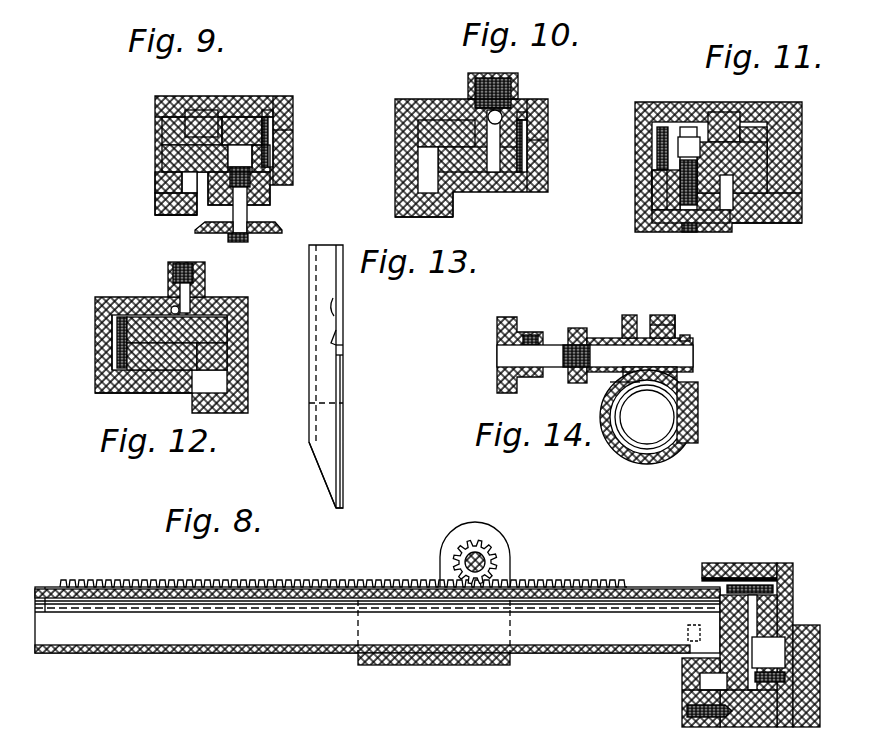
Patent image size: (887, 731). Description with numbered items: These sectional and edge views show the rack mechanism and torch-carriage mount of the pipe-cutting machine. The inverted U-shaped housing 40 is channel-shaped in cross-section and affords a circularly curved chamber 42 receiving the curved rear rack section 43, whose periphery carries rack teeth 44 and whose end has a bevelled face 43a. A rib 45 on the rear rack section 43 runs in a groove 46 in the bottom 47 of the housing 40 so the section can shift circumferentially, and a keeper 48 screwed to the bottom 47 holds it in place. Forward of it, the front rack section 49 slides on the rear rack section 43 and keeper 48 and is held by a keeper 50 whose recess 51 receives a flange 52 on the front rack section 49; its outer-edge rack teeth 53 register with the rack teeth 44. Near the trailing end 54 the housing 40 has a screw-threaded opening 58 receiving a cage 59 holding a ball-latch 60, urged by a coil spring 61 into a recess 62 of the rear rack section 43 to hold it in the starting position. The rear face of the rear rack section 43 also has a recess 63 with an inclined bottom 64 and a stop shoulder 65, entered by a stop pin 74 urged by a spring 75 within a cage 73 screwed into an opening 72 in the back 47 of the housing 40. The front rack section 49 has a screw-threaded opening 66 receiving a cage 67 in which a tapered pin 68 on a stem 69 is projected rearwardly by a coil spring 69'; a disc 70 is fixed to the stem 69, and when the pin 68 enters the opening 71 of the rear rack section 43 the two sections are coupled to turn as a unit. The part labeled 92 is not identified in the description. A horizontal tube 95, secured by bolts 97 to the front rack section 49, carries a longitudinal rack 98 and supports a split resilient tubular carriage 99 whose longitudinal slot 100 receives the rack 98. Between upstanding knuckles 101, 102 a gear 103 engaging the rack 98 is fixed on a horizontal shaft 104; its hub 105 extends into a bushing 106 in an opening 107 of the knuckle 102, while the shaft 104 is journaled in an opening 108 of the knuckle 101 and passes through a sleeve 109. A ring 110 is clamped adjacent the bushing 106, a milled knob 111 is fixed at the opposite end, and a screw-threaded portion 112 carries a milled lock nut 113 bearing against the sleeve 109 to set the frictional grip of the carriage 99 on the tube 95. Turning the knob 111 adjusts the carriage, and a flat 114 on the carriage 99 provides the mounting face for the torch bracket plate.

In FIG. 9, the housing 40 is at (278, 104).
In FIG. 10, the housing 40 is at (430, 92).
In FIG. 12, the housing 40 is at (100, 331).
In FIG. 8, the housing 40 is at (775, 570).
In FIG. 9, the chamber 42 is at (283, 135).
In FIG. 10, the chamber 42 is at (548, 142).
In FIG. 9, the rear rack section 43 is at (245, 120).
In FIG. 10, the rear rack section 43 is at (535, 115).
In FIG. 11, the rear rack section 43 is at (725, 118).
In FIG. 12, the rear rack section 43 is at (140, 335).
In FIG. 13, the rear rack section 43 is at (326, 292).
In FIG. 8, the rear rack section 43 is at (770, 612).
In FIG. 13, the bevelled face 43a is at (320, 470).
In FIG. 9, the rack teeth 44 is at (290, 112).
In FIG. 10, the rack teeth 44 is at (548, 122).
In FIG. 12, the rack teeth 44 is at (115, 322).
In FIG. 8, the rack teeth 44 is at (755, 588).
In FIG. 9, the rib 45 is at (205, 110).
In FIG. 9, the groove 46 is at (160, 112).
In FIG. 9, the bottom 47 is at (175, 100).
In FIG. 10, the bottom 47 is at (520, 105).
In FIG. 11, the bottom 47 is at (650, 112).
In FIG. 12, the bottom 47 is at (110, 300).
In FIG. 8, the bottom 47 is at (788, 590).
In FIG. 9, the keeper 48 is at (175, 128).
In FIG. 10, the keeper 48 is at (430, 130).
In FIG. 11, the keeper 48 is at (760, 130).
In FIG. 9, the front rack section 49 is at (190, 158).
In FIG. 10, the front rack section 49 is at (500, 172).
In FIG. 11, the front rack section 49 is at (790, 160).
In FIG. 12, the front rack section 49 is at (140, 360).
In FIG. 8, the front rack section 49 is at (700, 665).
In FIG. 9, the keeper 50 is at (170, 210).
In FIG. 10, the keeper 50 is at (400, 215).
In FIG. 11, the keeper 50 is at (760, 225).
In FIG. 8, the keeper 50 is at (688, 712).
In FIG. 9, the recess 51 is at (185, 185).
In FIG. 10, the recess 51 is at (420, 180).
In FIG. 8, the recess 51 is at (695, 698).
In FIG. 9, the flange 52 is at (168, 182).
In FIG. 10, the flange 52 is at (452, 205).
In FIG. 11, the flange 52 is at (770, 217).
In FIG. 8, the flange 52 is at (710, 680).
In FIG. 9, the rack teeth 53 is at (268, 147).
In FIG. 10, the rack teeth 53 is at (522, 148).
In FIG. 12, the rack teeth 53 is at (120, 358).
In FIG. 8, the rack teeth 53 is at (740, 588).
In FIG. 13, the trailing end 54 is at (345, 505).
In FIG. 10, the screw-threaded opening 58 is at (478, 105).
In FIG. 10, the cage 59 is at (485, 98).
In FIG. 10, the ball-latch 60 is at (515, 90).
In FIG. 10, the compressible coil spring 61 is at (494, 110).
In FIG. 10, the recess 62 is at (493, 150).
In FIG. 13, the recess 62 is at (332, 318).
In FIG. 12, the recess 63 is at (227, 332).
In FIG. 13, the inclined bottom 64 is at (343, 333).
In FIG. 13, the stop shoulder 65 is at (345, 355).
In FIG. 9, the screw-threaded opening 66 is at (178, 215).
In FIG. 11, the screw-threaded opening 66 is at (728, 200).
In FIG. 9, the cage 67 is at (255, 198).
In FIG. 9, the tapered reciprocatory pin 68 is at (252, 160).
In FIG. 11, the tapered reciprocatory pin 68 is at (662, 140).
In FIG. 13, the tapered reciprocatory pin 68 is at (345, 342).
In FIG. 9, the stem 69 is at (279, 214).
In FIG. 11, the stem 69 is at (701, 240).
In FIG. 9, the compressible coil spring 69' is at (282, 180).
In FIG. 11, the compressible coil spring 69' is at (645, 188).
In FIG. 9, the disc 70 is at (258, 233).
In FIG. 11, the disc 70 is at (665, 225).
In FIG. 11, the opening 71 is at (690, 130).
In FIG. 12, the screw-threaded opening 72 is at (180, 306).
In FIG. 12, the cage 73 is at (168, 290).
In FIG. 12, the stop pin 74 is at (195, 295).
In FIG. 12, the spring 75 is at (186, 264).
In FIG. 11, the lug 92 is at (658, 218).
In FIG. 14, the horizontal tube 95 is at (620, 440).
In FIG. 8, the horizontal tube 95 is at (158, 651).
In FIG. 8, the bolts 97 is at (688, 632).
In FIG. 14, the rack 98 is at (647, 417).
In FIG. 8, the rack 98 is at (617, 582).
In FIG. 14, the tubular carriage 99 is at (672, 442).
In FIG. 8, the tubular carriage 99 is at (468, 665).
In FIG. 14, the longitudinal slot 100 is at (612, 398).
In FIG. 14, the knuckle 101 is at (626, 318).
In FIG. 8, the knuckle 101 is at (462, 528).
In FIG. 14, the knuckle 102 is at (660, 320).
In FIG. 14, the gear 103 is at (678, 330).
In FIG. 8, the gear 103 is at (497, 560).
In FIG. 14, the horizontal shaft 104 is at (690, 358).
In FIG. 14, the hub 105 is at (670, 376).
In FIG. 14, the bushing 106 is at (680, 386).
In FIG. 14, the opening 107 is at (670, 325).
In FIG. 14, the opening 108 is at (620, 378).
In FIG. 14, the sleeve 109 is at (615, 338).
In FIG. 14, the ring 110 is at (690, 338).
In FIG. 14, the milled knob 111 is at (497, 368).
In FIG. 14, the screw-threaded portion 112 is at (565, 352).
In FIG. 14, the milled lock nut 113 is at (582, 340).
In FIG. 14, the flat 114 is at (698, 415).